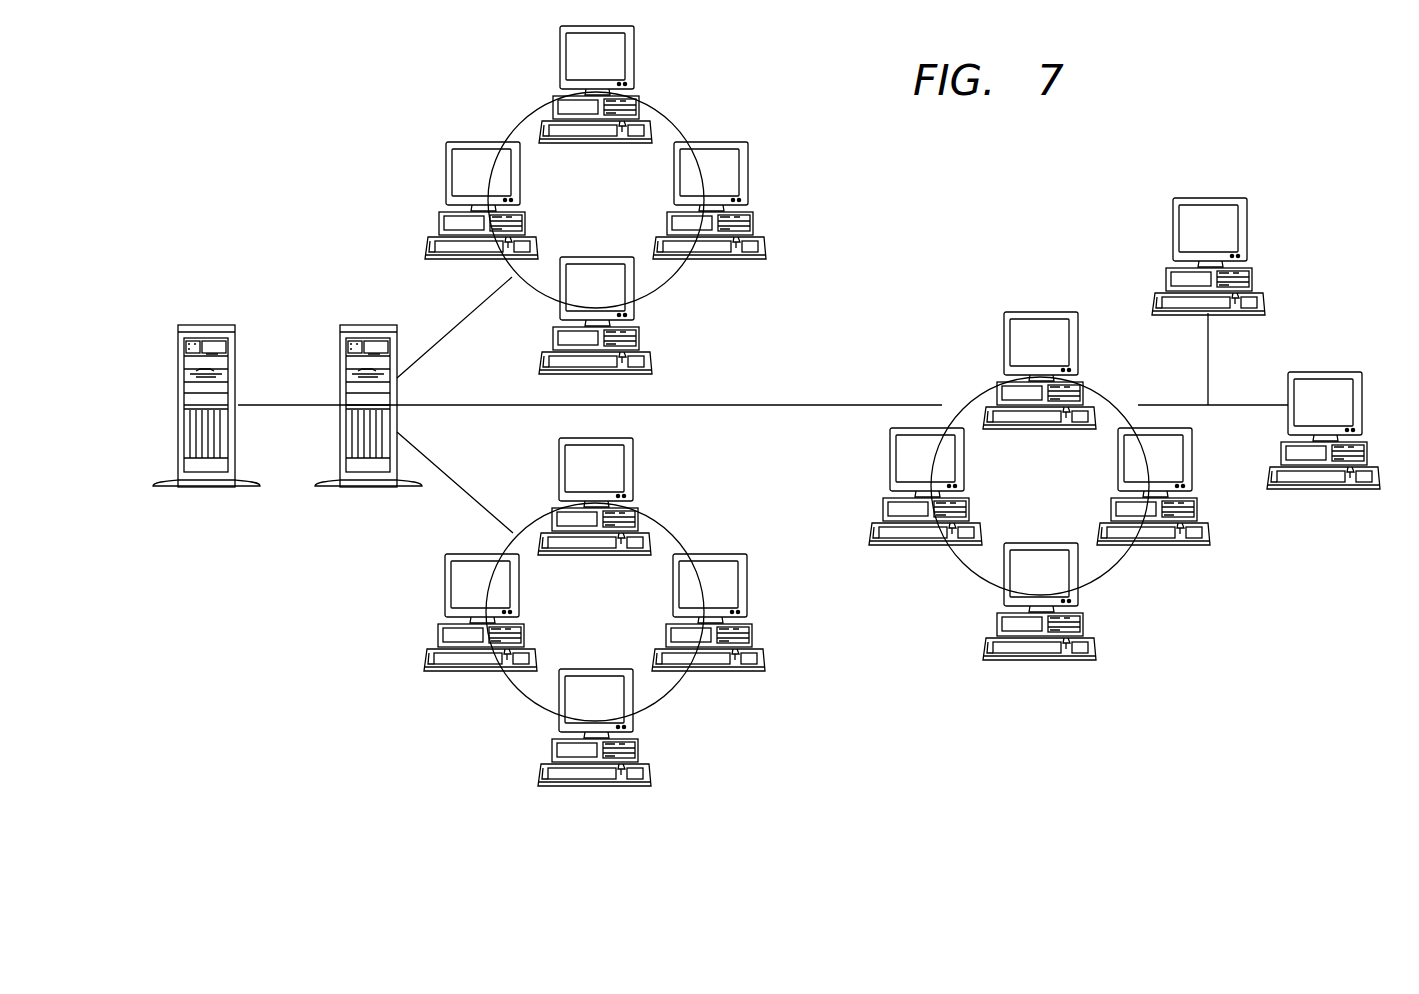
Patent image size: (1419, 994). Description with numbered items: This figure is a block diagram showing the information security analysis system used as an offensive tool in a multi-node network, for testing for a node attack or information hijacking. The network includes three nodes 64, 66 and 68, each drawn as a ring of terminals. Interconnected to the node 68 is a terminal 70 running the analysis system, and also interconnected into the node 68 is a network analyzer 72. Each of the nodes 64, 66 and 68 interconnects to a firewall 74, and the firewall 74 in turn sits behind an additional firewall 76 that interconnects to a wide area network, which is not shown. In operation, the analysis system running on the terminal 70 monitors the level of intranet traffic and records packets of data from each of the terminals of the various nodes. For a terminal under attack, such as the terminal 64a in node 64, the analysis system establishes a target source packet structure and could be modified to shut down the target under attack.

The node 64 is at (596, 200).
The terminal 64a is at (710, 157).
The node 66 is at (581, 624).
The node 68 is at (1025, 498).
The terminal 70 is at (1210, 197).
The network analyzer 72 is at (1325, 371).
The firewall 74 is at (368, 322).
The firewall 76 is at (210, 322).